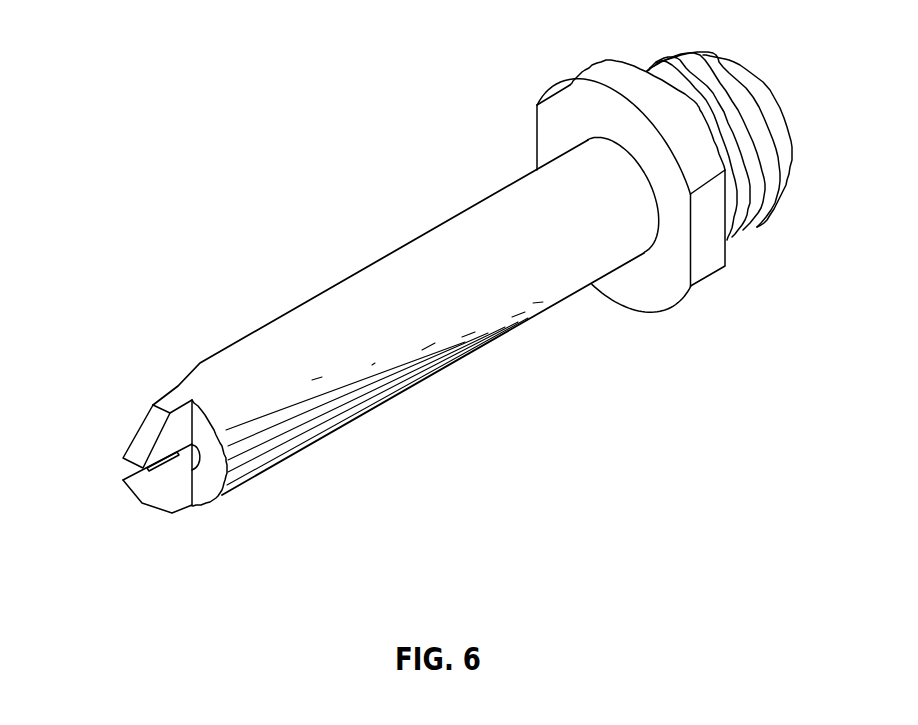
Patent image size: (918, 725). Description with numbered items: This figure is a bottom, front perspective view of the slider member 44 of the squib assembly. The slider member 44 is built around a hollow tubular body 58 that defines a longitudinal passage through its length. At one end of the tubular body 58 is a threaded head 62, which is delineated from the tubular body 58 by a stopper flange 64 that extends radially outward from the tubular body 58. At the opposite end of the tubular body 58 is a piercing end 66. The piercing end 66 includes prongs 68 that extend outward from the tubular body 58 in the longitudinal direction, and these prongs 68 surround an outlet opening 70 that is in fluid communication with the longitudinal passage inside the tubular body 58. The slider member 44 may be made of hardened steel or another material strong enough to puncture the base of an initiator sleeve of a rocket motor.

The slider member 44 is at (130, 34).
The hollow tubular body 58 is at (372, 413).
The threaded head 62 is at (673, 66).
The stopper flange 64 is at (569, 80).
The piercing end 66 is at (170, 392).
The prongs 68 is at (122, 459).
The outlet opening 70 is at (196, 507).